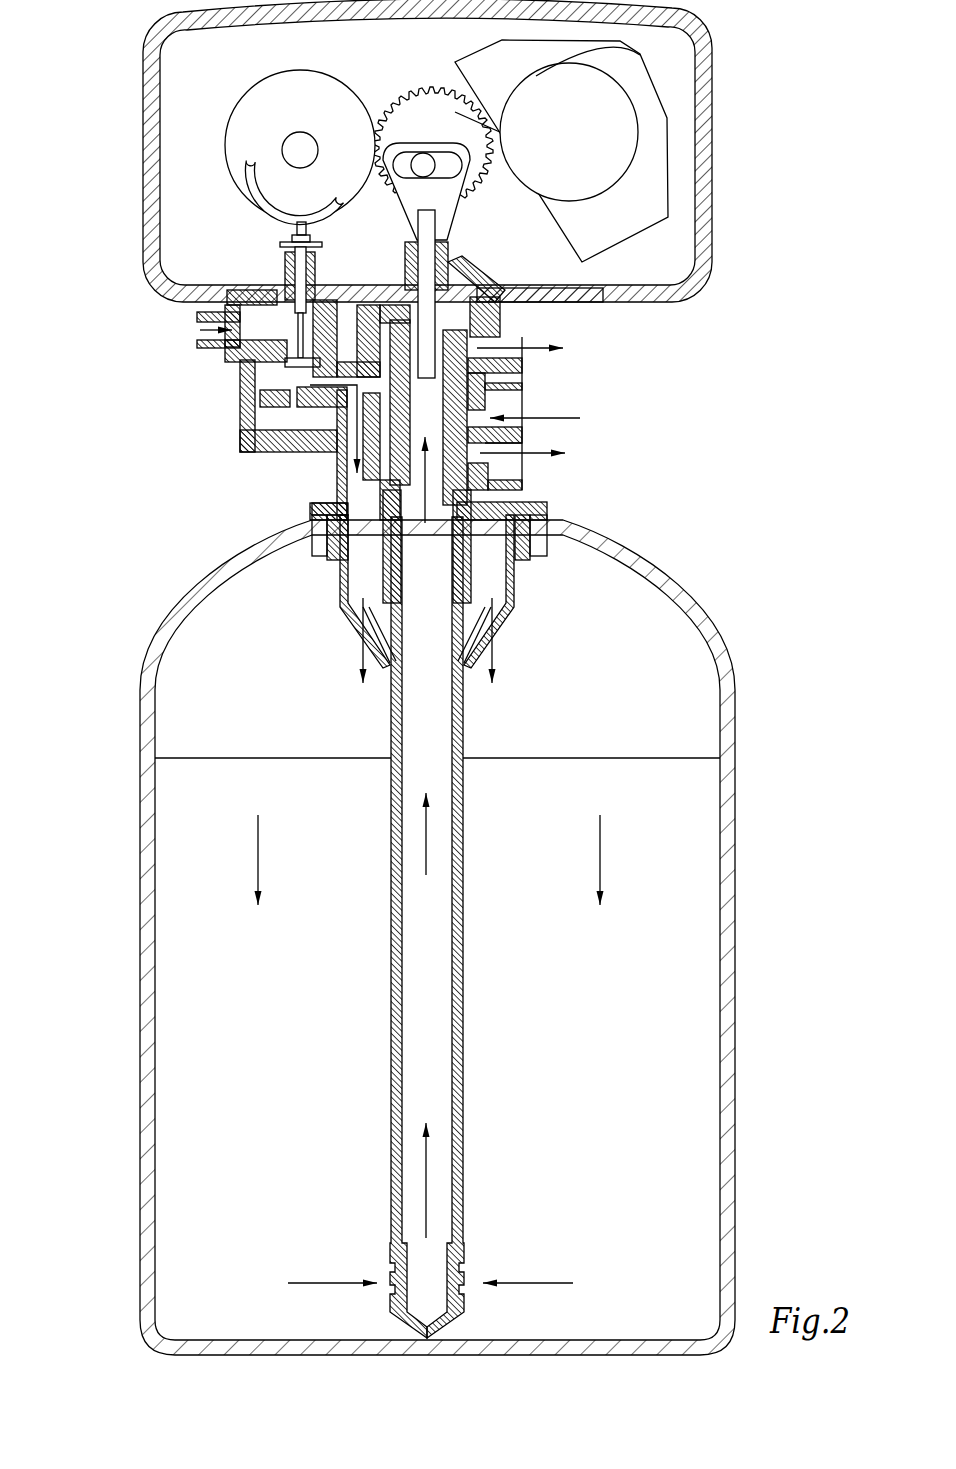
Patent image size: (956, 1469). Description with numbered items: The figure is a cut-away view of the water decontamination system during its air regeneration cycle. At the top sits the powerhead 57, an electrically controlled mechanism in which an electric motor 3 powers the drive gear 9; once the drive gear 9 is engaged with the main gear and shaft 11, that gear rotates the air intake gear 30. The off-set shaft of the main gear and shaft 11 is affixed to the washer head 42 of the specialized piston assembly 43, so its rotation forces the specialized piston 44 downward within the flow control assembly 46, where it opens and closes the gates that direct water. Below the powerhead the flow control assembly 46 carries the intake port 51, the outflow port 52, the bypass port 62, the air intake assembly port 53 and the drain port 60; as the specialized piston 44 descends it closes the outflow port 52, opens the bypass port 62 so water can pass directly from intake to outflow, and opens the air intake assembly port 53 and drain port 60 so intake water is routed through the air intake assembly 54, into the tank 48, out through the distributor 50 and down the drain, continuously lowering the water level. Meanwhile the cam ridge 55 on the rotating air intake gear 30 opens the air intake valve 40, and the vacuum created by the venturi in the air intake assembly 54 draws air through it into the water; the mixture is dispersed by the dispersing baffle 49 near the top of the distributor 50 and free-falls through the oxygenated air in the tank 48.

The electric motor 3 is at (613, 87).
The drive gear 9 is at (512, 197).
The main gear and shaft 11 is at (457, 110).
The air intake gear 30 is at (242, 100).
The air intake valve 40 is at (300, 266).
The washer head 42 is at (465, 107).
The specialized piston assembly 43 is at (455, 268).
The specialized piston 44 is at (460, 490).
The flow control assembly 46 is at (532, 360).
The tank 48 is at (138, 684).
The dispersing baffle 49 is at (355, 618).
The distributor 50 is at (466, 719).
The intake port 51 is at (520, 407).
The outflow port 52 is at (513, 468).
The air intake assembly port 53 is at (206, 328).
The air intake assembly 54 is at (228, 413).
The cam ridge 55 is at (290, 206).
The powerhead 57 is at (716, 126).
The drain port 60 is at (523, 336).
The bypass port 62 is at (528, 435).